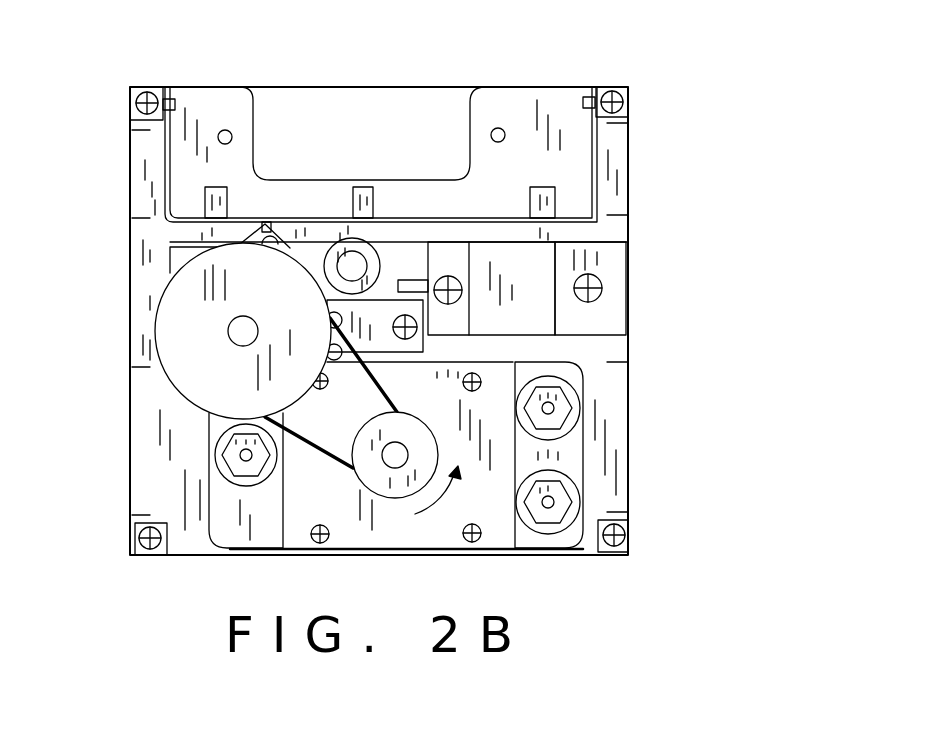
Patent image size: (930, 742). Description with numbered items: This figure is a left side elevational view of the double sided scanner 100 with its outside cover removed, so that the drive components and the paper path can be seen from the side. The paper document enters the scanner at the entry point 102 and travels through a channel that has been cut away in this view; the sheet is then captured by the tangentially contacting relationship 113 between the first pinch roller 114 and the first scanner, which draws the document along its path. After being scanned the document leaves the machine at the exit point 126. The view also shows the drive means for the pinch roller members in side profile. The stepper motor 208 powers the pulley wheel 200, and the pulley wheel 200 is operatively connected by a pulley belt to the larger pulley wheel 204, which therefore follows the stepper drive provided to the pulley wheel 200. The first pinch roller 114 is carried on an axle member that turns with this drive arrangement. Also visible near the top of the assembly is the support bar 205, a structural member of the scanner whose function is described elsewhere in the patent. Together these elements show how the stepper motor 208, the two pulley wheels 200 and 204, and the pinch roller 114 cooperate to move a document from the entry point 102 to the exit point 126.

The double sided scanner 100 is at (669, 104).
The entry point 102 is at (620, 305).
The tangentially contacting relationship 113 is at (364, 297).
The first pinch roller 114 is at (378, 243).
The exit point 126 is at (150, 303).
The pulley wheel 200 is at (400, 483).
The pulley wheel 204 is at (195, 387).
The support bar 205 is at (270, 230).
The stepper motor 208 is at (585, 463).